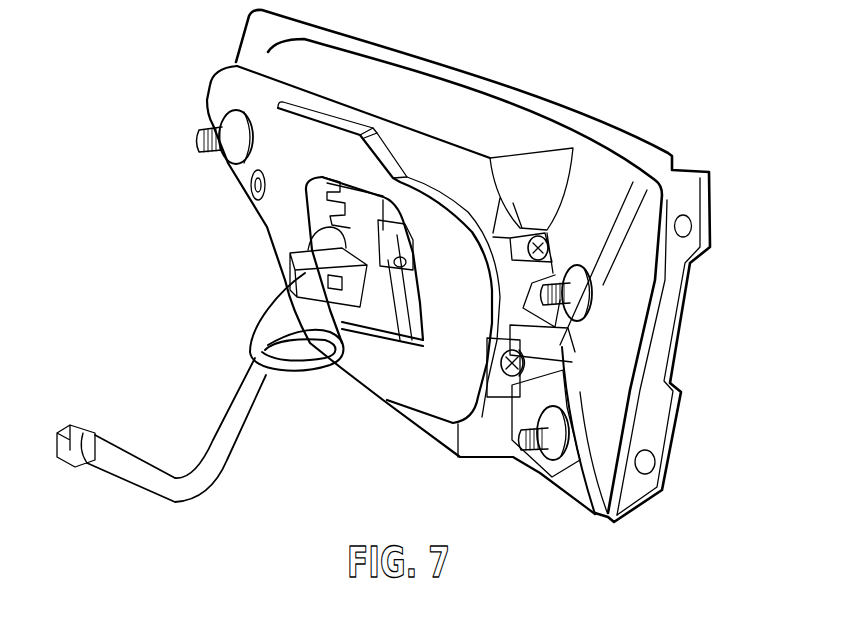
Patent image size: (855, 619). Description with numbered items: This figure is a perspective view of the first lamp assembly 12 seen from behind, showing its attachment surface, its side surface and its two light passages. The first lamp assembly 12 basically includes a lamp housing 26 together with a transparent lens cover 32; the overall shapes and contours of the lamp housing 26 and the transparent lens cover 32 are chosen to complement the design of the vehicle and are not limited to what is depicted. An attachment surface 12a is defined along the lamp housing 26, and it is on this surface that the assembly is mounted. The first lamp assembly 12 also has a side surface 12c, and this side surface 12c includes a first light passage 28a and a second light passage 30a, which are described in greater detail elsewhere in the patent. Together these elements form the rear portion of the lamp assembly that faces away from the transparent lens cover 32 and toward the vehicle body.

The first lamp assembly 12 is at (603, 36).
The attachment surface 12a is at (533, 460).
The side surface 12c is at (688, 193).
The lamp housing 26 is at (230, 67).
The first light passage 28a is at (689, 228).
The second light passage 30a is at (647, 463).
The transparent lens cover 32 is at (653, 145).